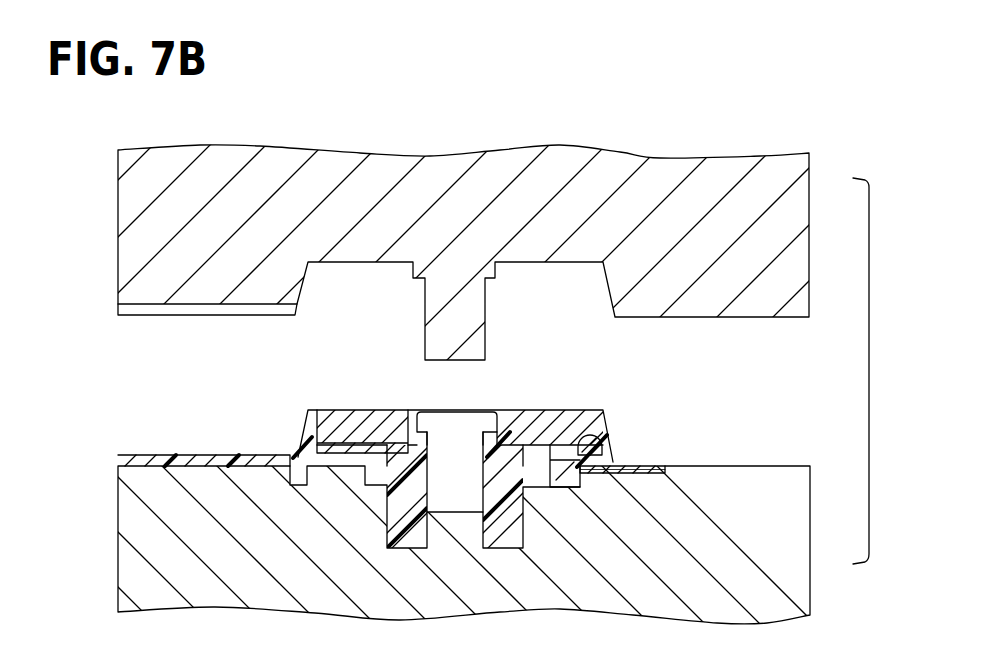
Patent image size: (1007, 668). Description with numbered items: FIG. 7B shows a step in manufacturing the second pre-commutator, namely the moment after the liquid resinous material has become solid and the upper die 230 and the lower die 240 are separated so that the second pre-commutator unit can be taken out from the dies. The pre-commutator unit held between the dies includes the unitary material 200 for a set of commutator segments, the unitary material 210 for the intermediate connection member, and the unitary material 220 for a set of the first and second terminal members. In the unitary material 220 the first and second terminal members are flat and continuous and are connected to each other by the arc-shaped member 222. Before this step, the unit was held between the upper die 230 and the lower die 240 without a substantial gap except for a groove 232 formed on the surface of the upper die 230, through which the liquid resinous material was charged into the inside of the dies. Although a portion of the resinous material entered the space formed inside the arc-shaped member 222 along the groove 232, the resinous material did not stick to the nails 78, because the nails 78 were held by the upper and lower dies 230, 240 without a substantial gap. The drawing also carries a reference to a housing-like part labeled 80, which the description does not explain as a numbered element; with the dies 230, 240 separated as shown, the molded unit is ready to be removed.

The upper die 230 is at (343, 168).
The groove 232 is at (198, 308).
The housing 80 is at (305, 427).
The unitary material for commutator segments 200 is at (573, 405).
The unitary material for intermediate connection member 210 is at (604, 441).
The unitary material for first and second terminal members 220 is at (642, 461).
The nails 78 is at (655, 466).
The lower die 240 is at (193, 480).
The arc-shaped member 222 is at (273, 465).